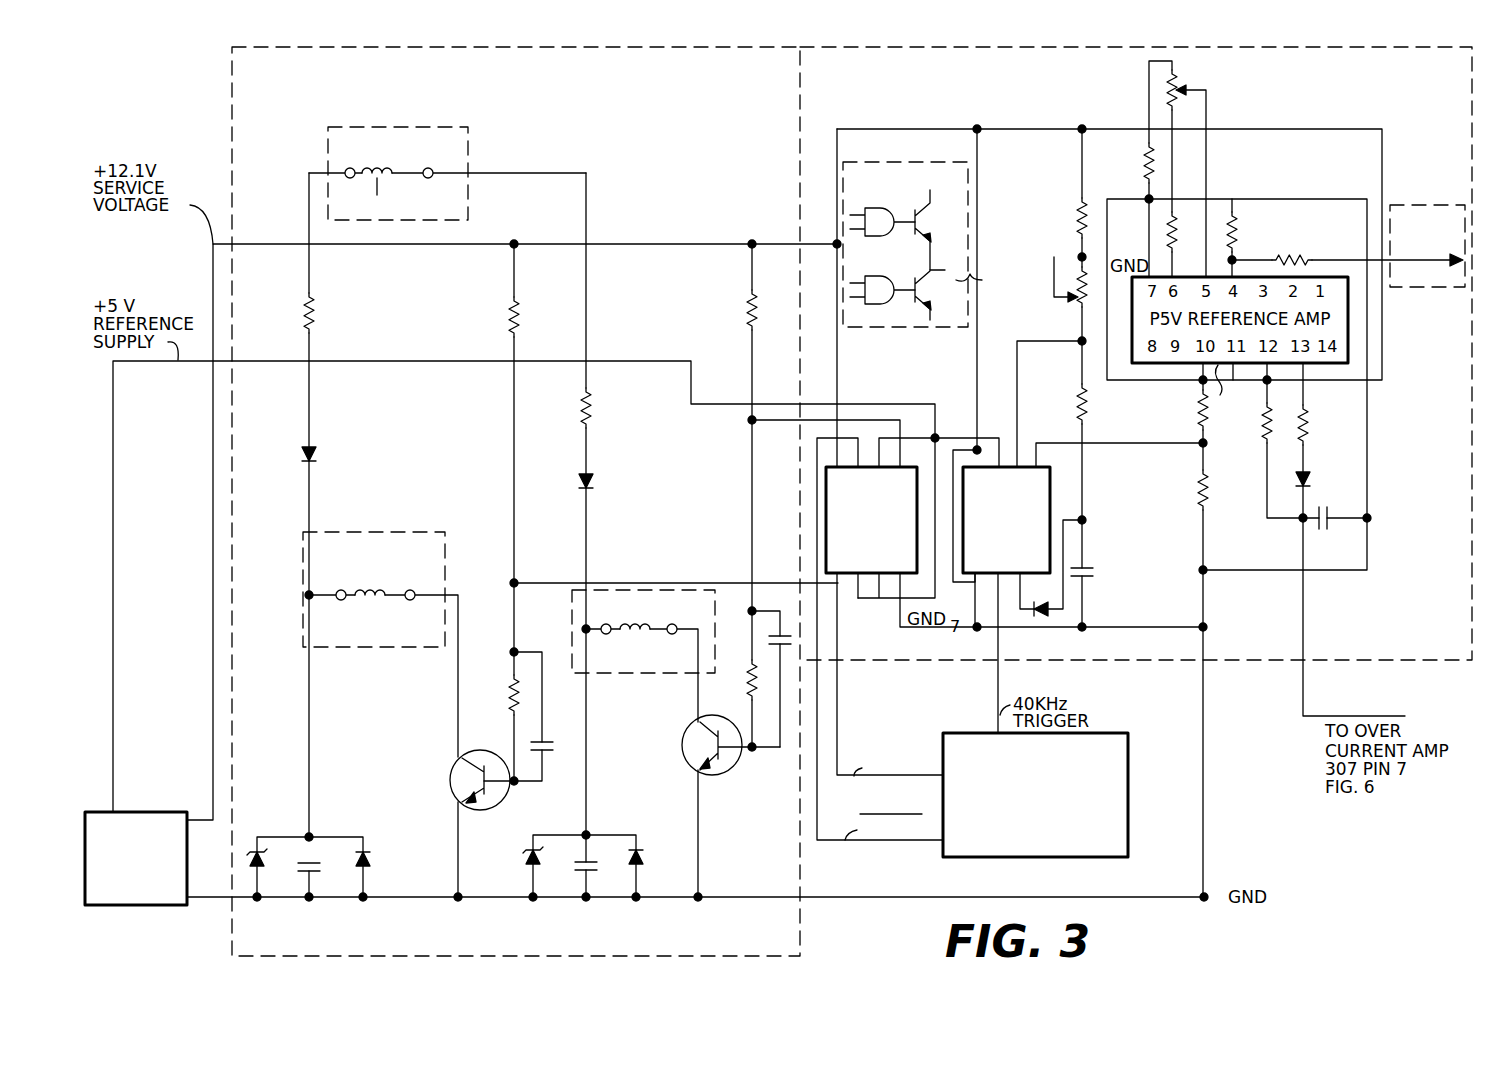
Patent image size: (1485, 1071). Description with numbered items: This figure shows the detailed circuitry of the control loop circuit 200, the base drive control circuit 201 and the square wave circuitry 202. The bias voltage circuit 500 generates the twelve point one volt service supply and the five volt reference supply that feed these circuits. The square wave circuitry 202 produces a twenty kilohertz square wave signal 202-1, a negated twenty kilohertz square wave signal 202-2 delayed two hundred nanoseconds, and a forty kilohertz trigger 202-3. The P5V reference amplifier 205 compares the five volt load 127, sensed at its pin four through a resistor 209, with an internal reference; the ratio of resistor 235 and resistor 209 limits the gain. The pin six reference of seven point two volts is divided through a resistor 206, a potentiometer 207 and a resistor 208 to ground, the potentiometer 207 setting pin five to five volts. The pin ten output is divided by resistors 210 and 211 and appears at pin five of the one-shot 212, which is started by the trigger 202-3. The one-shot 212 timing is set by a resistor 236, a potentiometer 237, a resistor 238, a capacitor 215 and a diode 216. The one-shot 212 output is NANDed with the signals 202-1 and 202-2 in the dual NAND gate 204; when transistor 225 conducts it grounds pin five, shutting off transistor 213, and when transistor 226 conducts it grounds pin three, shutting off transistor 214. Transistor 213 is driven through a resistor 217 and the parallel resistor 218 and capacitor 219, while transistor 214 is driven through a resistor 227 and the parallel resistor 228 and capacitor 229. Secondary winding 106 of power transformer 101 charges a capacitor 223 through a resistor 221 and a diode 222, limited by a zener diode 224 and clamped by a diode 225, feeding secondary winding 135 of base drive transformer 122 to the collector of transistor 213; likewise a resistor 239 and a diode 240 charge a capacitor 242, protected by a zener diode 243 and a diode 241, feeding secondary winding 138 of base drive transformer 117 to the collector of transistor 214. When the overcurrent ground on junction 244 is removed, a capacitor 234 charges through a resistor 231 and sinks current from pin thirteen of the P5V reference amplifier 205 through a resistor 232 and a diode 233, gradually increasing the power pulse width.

The power transformer 101 is at (464, 127).
The secondary winding 106 is at (405, 150).
The base drive transformer 117 is at (412, 532).
The base drive transformer 122 is at (568, 618).
The load 127 is at (1426, 288).
The secondary winding 135 is at (634, 625).
The secondary winding 138 is at (370, 590).
The control loop circuit 200 is at (1438, 659).
The base drive control circuit 201 is at (768, 952).
The square wave circuitry 202 is at (1132, 734).
The 20KHz square wave signal 202-1 is at (840, 730).
The negated 20KHz square wave signal 202-2 is at (822, 795).
The 40KHz trigger 202-3 is at (998, 674).
The dual NAND gate 204 is at (934, 336).
The P5V reference amplifier 205 is at (1236, 387).
The resistor 206 is at (1166, 246).
The potentiometer 207 is at (1176, 76).
The resistor 208 is at (1144, 158).
The resistor 209 is at (1297, 259).
The resistor 210 is at (1194, 400).
The resistor 211 is at (1190, 485).
The one-shot 212 is at (1022, 465).
The transistor 213 is at (688, 726).
The transistor 214 is at (454, 765).
The capacitor 215 is at (1092, 572).
The diode 216 is at (1049, 619).
The resistor 217 is at (749, 300).
The resistor 218 is at (750, 680).
The capacitor 219 is at (788, 633).
The resistor 221 is at (590, 392).
The diode 222 is at (594, 482).
The capacitor 223 is at (594, 877).
The zener diode 224 is at (518, 848).
The diode 225 is at (646, 849).
The transistor 226 is at (922, 298).
The resistor 227 is at (511, 324).
The resistor 228 is at (504, 690).
The capacitor 229 is at (548, 736).
The resistor 231 is at (1261, 433).
The resistor 232 is at (1308, 431).
The diode 233 is at (1308, 480).
The capacitor 234 is at (1318, 524).
The resistor 235 is at (1237, 228).
The resistor 236 is at (1076, 205).
The potentiometer 237 is at (1066, 307).
The resistor 238 is at (1077, 390).
The resistor 239 is at (316, 302).
The diode 240 is at (318, 454).
The diode 241 is at (374, 853).
The capacitor 242 is at (315, 875).
The zener diode 243 is at (244, 848).
The junction 244 is at (1296, 523).
The bias voltage circuit 500 is at (172, 812).